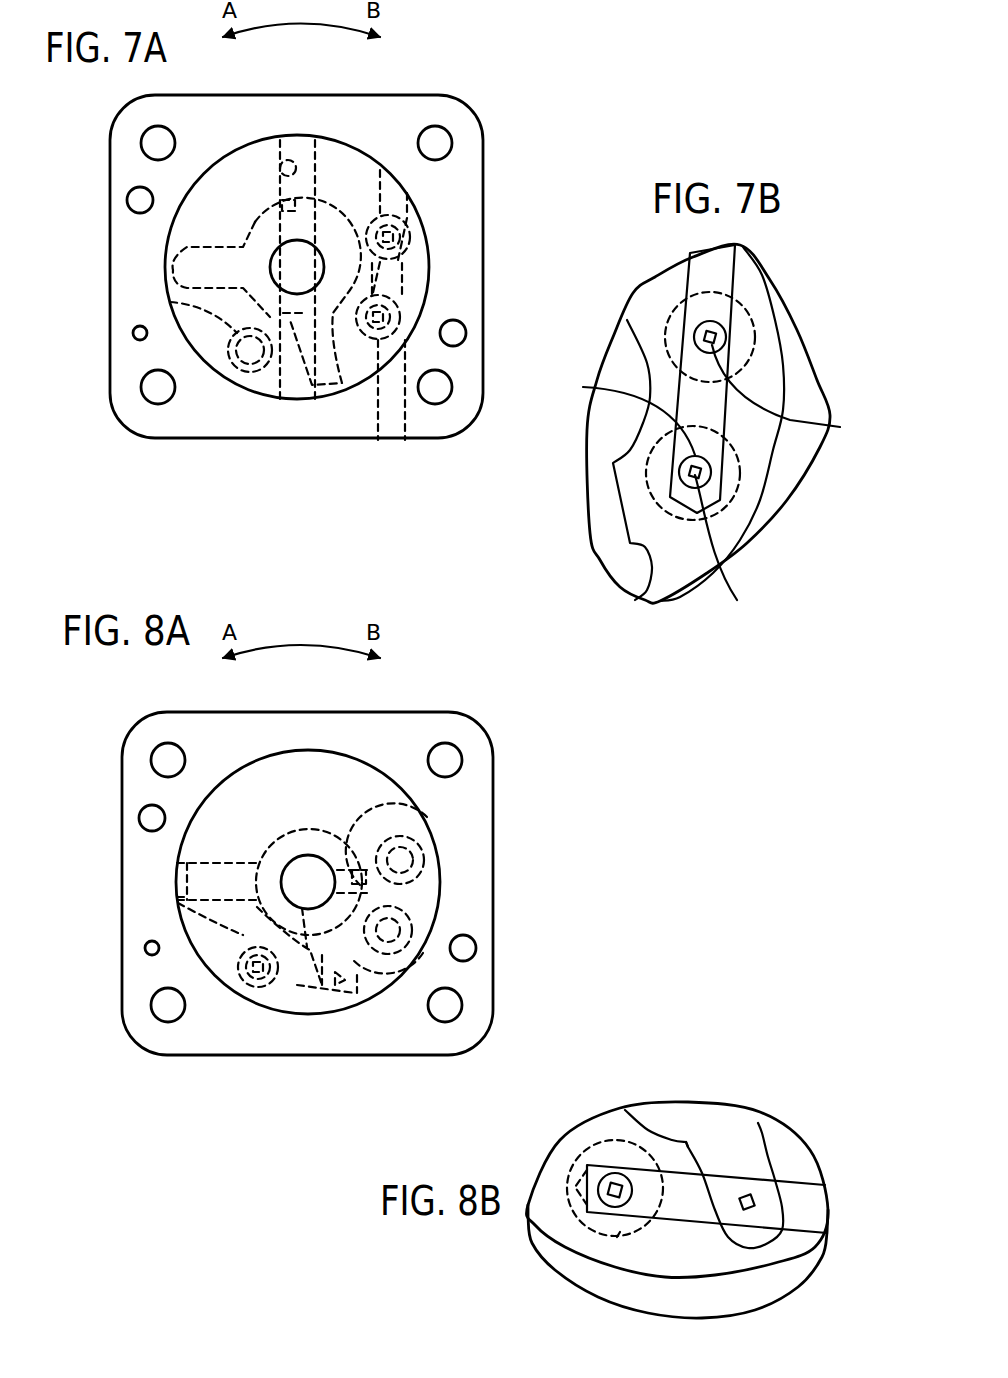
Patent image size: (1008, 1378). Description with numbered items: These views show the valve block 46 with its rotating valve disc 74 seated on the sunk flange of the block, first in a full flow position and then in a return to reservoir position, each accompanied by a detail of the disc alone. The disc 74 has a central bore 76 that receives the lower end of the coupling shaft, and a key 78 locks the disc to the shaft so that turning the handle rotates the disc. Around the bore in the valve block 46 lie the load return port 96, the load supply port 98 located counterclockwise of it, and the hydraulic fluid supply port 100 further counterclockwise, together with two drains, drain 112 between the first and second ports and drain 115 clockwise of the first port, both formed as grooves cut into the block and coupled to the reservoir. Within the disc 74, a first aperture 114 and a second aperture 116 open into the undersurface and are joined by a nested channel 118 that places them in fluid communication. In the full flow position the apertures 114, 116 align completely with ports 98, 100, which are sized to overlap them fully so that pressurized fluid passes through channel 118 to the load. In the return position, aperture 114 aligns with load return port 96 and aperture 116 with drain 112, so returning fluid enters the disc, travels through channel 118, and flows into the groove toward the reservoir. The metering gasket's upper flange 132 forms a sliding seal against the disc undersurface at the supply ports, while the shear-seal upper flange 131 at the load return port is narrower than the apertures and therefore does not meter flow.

In FIG. 7A, the valve block 46 is at (372, 88).
In FIG. 8A, the valve block 46 is at (318, 706).
In FIG. 7A, the disc 74 is at (341, 131).
In FIG. 7B, the disc 74 is at (790, 380).
In FIG. 8A, the disc 74 is at (372, 755).
In FIG. 8B, the disc 74 is at (677, 1286).
In FIG. 7A, the central bore 76 is at (277, 250).
In FIG. 8A, the central bore 76 is at (308, 855).
In FIG. 7A, the key 78 is at (268, 147).
In FIG. 8A, the key 78 is at (188, 863).
In FIG. 7A, the first port 96 is at (245, 373).
In FIG. 8A, the first port 96 is at (240, 958).
In FIG. 8B, the first port 96 is at (606, 1167).
In FIG. 7A, the second port 98 is at (407, 347).
In FIG. 7B, the second port 98 is at (583, 387).
In FIG. 8A, the second port 98 is at (440, 913).
In FIG. 7A, the third port 100 is at (387, 293).
In FIG. 7B, the third port 100 is at (683, 301).
In FIG. 8A, the third port 100 is at (437, 848).
In FIG. 7A, the drain 112 is at (360, 393).
In FIG. 7B, the drain 112 is at (650, 555).
In FIG. 8A, the drain 112 is at (322, 985).
In FIG. 8B, the drain 112 is at (750, 1248).
In FIG. 7A, the first aperture 114 is at (405, 440).
In FIG. 7B, the first aperture 114 is at (737, 600).
In FIG. 8A, the first aperture 114 is at (252, 988).
In FIG. 8B, the first aperture 114 is at (750, 1195).
In FIG. 7A, the drain 115 is at (177, 272).
In FIG. 8A, the drain 115 is at (177, 870).
In FIG. 7A, the second aperture 116 is at (417, 248).
In FIG. 7B, the second aperture 116 is at (840, 427).
In FIG. 8A, the second aperture 116 is at (357, 985).
In FIG. 8B, the second aperture 116 is at (632, 1183).
In FIG. 7A, the nested channel 118 is at (423, 288).
In FIG. 7B, the nested channel 118 is at (727, 420).
In FIG. 8A, the nested channel 118 is at (312, 985).
In FIG. 8B, the nested channel 118 is at (690, 1152).
In FIG. 7A, the upper flange 131 is at (170, 302).
In FIG. 8A, the upper flange 131 is at (177, 897).
In FIG. 8B, the upper flange 131 is at (617, 1237).
In FIG. 7A, the upper flange 132 is at (420, 220).
In FIG. 7B, the upper flange 132 is at (720, 288).
In FIG. 8A, the upper flange 132 is at (427, 817).